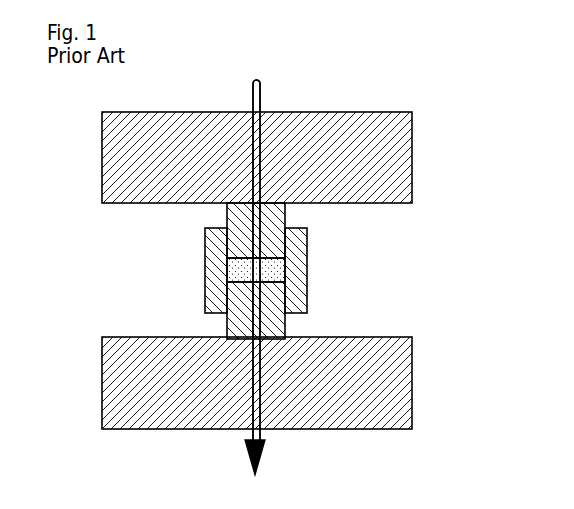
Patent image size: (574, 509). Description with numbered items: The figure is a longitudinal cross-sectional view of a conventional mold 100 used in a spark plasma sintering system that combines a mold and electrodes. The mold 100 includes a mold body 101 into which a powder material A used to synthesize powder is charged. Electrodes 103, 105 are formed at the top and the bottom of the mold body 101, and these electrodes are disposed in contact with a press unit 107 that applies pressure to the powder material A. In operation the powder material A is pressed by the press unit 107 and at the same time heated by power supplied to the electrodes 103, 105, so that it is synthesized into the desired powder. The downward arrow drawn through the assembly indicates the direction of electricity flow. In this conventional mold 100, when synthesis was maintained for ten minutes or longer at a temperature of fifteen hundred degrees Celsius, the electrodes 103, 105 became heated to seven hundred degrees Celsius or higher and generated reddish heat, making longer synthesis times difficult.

The mold 100 is at (80, 100).
The mold body 101 is at (298, 233).
The electrode 103 is at (102, 167).
The electrode 105 is at (102, 370).
The press unit 107 is at (227, 208).
The powder material A is at (285, 266).